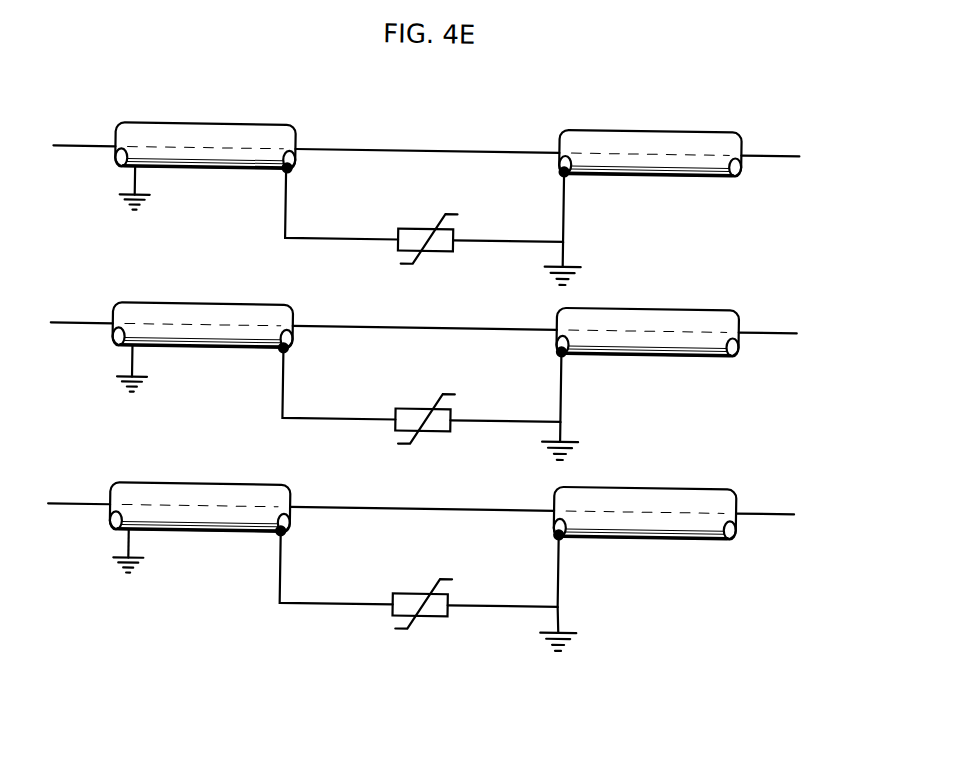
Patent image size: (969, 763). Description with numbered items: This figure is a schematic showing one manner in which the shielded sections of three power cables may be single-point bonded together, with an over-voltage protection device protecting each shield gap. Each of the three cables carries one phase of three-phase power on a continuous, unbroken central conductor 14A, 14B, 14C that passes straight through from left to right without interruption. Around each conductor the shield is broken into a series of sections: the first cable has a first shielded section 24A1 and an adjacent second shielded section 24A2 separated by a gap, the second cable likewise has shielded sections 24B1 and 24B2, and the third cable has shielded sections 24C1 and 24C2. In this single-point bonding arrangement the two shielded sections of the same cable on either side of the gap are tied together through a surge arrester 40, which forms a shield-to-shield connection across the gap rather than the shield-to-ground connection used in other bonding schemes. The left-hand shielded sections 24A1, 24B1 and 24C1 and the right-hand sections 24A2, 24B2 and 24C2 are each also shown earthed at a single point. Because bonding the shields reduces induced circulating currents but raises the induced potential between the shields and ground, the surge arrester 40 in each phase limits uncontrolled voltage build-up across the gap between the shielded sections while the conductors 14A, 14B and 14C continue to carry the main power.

The central conductor 14A is at (414, 148).
The central conductor 14B is at (454, 328).
The central conductor 14C is at (452, 508).
The shielded section 24A1 is at (181, 126).
The shielded section 24A2 is at (641, 127).
The shielded section 24B1 is at (149, 306).
The shielded section 24B2 is at (641, 305).
The shielded section 24C1 is at (138, 486).
The shielded section 24C2 is at (634, 484).
The surge arrester 40 is at (383, 251).